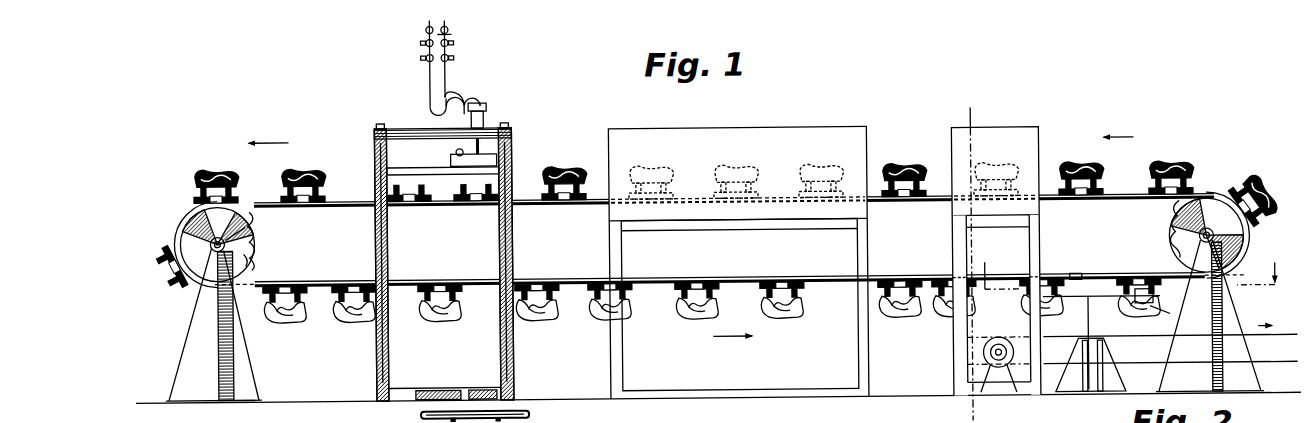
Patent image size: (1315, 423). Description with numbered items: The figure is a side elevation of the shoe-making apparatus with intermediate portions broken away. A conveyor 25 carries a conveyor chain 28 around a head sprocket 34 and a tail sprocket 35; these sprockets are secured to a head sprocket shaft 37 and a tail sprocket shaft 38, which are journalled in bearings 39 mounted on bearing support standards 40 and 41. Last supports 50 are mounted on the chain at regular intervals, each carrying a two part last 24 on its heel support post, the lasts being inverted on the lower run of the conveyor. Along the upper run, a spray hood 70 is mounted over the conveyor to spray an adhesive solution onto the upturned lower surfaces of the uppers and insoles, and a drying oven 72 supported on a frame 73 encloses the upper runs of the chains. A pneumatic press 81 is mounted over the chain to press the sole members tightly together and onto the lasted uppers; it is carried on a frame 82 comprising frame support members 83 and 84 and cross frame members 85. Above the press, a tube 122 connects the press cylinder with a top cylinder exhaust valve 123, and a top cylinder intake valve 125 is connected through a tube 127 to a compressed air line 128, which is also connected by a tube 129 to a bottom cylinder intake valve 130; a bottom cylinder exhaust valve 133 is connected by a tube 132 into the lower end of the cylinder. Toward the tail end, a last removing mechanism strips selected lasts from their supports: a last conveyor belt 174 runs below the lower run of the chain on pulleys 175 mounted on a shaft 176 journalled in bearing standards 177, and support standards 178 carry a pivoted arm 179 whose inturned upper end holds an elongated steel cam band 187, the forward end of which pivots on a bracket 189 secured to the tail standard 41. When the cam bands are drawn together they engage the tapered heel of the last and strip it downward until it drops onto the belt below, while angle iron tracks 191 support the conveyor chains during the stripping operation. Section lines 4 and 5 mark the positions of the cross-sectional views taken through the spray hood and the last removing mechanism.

The section line 4 is at (967, 255).
The section line 5 is at (1129, 264).
The two part last 24 is at (441, 318).
The conveyor 25 is at (182, 206).
The conveyor chain 28 is at (744, 286).
The head sprocket 34 is at (232, 238).
The tail sprocket 35 is at (1163, 236).
The head sprocket shaft 37 is at (247, 222).
The tail sprocket shaft 38 is at (1201, 240).
The bearings 39 is at (243, 253).
The bearing support standard 40 is at (180, 355).
The bearing support standard 41 is at (1238, 315).
The last support 50 is at (170, 262).
The spray hood 70 is at (994, 130).
The drying oven 72 is at (710, 128).
The frame 73 is at (618, 358).
The pneumatic press 81 is at (488, 108).
The frame 82 is at (515, 147).
The frame support member 83 is at (376, 346).
The frame support member 84 is at (500, 348).
The cross frame members 85 is at (380, 121).
The tube 122 is at (449, 77).
The top cylinder exhaust valve 123 is at (457, 57).
The top cylinder intake valve 125 is at (457, 42).
The tube 127 is at (456, 32).
The compressed air line 128 is at (451, 27).
The tube 129 is at (428, 28).
The bottom cylinder intake valve 130 is at (423, 41).
The tube 132 is at (431, 86).
The bottom cylinder exhaust valve 133 is at (423, 56).
The last conveyor belt 174 is at (1297, 338).
The pulleys 175 is at (1002, 345).
The shaft 176 is at (993, 349).
The bearing standards 177 is at (996, 386).
The support standard 178 is at (1080, 398).
The arm 179 is at (1086, 330).
The cam band 187 is at (1134, 310).
The bracket 189 is at (1155, 317).
The angle iron track 191 is at (1076, 277).